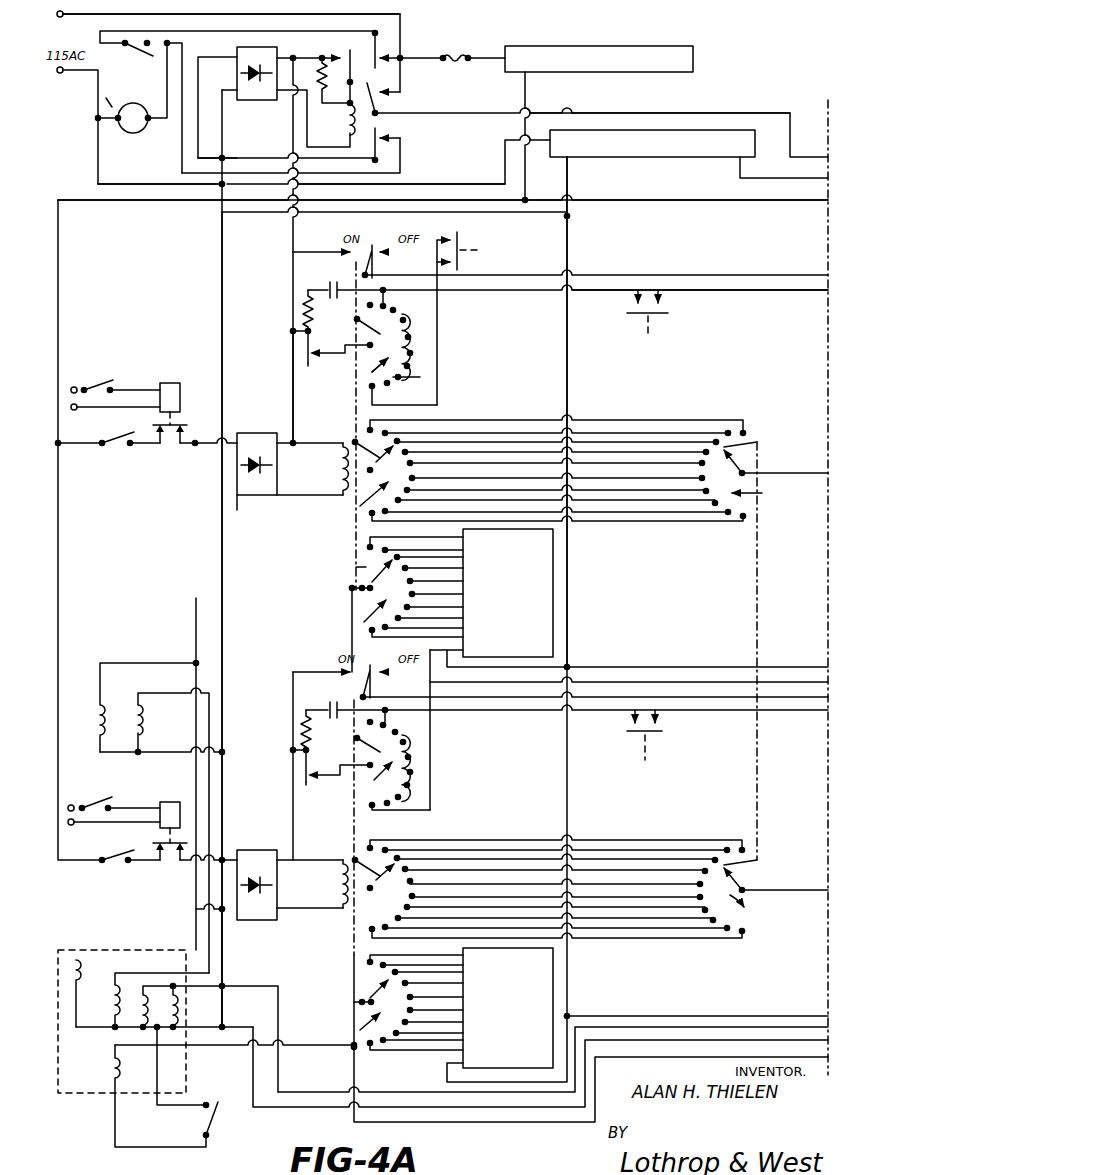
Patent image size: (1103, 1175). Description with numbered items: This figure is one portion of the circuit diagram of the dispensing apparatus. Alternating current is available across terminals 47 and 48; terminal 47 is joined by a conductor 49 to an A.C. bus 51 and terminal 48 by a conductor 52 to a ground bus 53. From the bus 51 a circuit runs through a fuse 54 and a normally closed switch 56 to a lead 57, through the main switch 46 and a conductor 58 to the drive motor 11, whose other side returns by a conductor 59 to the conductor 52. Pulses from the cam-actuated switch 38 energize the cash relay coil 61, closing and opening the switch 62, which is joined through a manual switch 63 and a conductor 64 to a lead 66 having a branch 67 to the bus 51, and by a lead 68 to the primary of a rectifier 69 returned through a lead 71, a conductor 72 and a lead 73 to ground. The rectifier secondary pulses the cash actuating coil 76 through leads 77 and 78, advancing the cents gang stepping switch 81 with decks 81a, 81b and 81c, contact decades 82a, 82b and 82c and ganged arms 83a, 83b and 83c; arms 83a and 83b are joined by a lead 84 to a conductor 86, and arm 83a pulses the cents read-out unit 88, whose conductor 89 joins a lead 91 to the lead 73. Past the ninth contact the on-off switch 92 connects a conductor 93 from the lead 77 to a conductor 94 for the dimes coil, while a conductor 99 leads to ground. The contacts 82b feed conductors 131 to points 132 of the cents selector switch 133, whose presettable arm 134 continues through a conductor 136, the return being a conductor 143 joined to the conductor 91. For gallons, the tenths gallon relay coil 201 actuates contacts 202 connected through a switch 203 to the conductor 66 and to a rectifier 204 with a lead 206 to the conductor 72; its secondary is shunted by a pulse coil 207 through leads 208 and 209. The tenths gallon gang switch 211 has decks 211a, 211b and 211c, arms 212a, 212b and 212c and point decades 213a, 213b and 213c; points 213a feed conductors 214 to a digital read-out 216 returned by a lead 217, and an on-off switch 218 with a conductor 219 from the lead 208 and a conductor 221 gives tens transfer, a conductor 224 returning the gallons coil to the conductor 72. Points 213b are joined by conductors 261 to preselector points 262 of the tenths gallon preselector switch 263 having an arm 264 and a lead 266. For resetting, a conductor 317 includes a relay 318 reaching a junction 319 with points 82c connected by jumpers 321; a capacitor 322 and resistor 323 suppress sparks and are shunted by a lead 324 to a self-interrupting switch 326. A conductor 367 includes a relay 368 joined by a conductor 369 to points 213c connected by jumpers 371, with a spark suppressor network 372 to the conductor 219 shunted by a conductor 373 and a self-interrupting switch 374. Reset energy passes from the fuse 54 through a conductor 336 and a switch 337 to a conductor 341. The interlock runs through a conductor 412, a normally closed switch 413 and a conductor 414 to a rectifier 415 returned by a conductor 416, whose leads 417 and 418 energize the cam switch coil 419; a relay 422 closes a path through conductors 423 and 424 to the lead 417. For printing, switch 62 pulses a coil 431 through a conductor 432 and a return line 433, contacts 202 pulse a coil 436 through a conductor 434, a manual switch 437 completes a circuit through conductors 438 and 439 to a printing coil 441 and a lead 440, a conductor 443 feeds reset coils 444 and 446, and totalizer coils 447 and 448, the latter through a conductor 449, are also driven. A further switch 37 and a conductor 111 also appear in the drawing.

The drive motor 11 is at (118, 132).
The switch 37 is at (120, 796).
The switch 38 is at (105, 380).
The main switch 46 is at (128, 53).
The terminal 47 is at (68, 24).
The terminal 48 is at (66, 86).
The conductor 49 is at (306, 20).
The A.C. bus 51 is at (605, 40).
The conductor 52 is at (474, 180).
The ground bus 53 is at (662, 160).
The fuse 54 is at (459, 63).
The normally closed switch 56 is at (395, 40).
The lead 57 is at (198, 40).
The conductor 58 is at (164, 96).
The conductor 59 is at (110, 96).
The cash relay coil 61 is at (180, 373).
The cash relay switch 62 is at (170, 448).
The manual switch 63 is at (118, 450).
The conductor 64 is at (80, 455).
The lead 66 is at (726, 200).
The branch 67 is at (530, 93).
The lead 68 is at (210, 432).
The rectifier 69 is at (274, 432).
The lead 71 is at (238, 516).
The conductor 72 is at (222, 330).
The lead 73 is at (568, 170).
The cash actuating coil 76 is at (341, 478).
The lead 77 is at (334, 440).
The lead 78 is at (292, 510).
The cash gang stepping switch 81 is at (356, 560).
The deck 81a is at (387, 606).
The deck 81b is at (363, 512).
The deck 81c is at (376, 370).
The decade of contacts 82a is at (368, 628).
The decade of contacts 82b is at (412, 440).
The decade of contacts 82c is at (412, 356).
The rotating arm 83a is at (372, 584).
The rotating arm 83b is at (383, 463).
The rotating arm 83c is at (382, 426).
The lead 84 is at (352, 586).
The conductor 86 is at (654, 663).
The cents digital read-out unit 88 is at (556, 566).
The conductor 89 is at (572, 655).
The lead 91 is at (570, 385).
The on-off switch 92 is at (378, 264).
The conductor 93 is at (294, 358).
The conductor 94 is at (510, 280).
The conductor 99 is at (789, 175).
The line 111 is at (743, 653).
The conductors 131 is at (642, 442).
The switch points 132 is at (745, 428).
The cents selector switch 133 is at (769, 651).
The manually settable arm 134 is at (740, 455).
The conductor 136 is at (818, 468).
The conductor 143 is at (802, 1006).
The tenths gallon relay coil 201 is at (182, 783).
The relay contacts 202 is at (168, 876).
The switch 203 is at (116, 866).
The rectifier 204 is at (278, 840).
The lead 206 is at (226, 924).
The pulse coil 207 is at (338, 896).
The lead 208 is at (320, 862).
The lead 209 is at (284, 916).
The tenths gallon gang switch 211 is at (362, 964).
The deck 211a is at (361, 1022).
The deck 211b is at (363, 900).
The deck 211c is at (362, 827).
The switch arm 212a is at (365, 998).
The switch arm 212b is at (380, 872).
The switch arm 212c is at (386, 730).
The decade of contact points 213a is at (388, 960).
The decade of contact points 213b is at (388, 846).
The decade of contact points 213c is at (412, 746).
The decade of conductors 214 is at (384, 1052).
The digital read-out mechanism 216 is at (508, 1008).
The lead 217 is at (447, 1082).
The on-off switch 218 is at (378, 684).
The conductor 219 is at (298, 714).
The conductor 221 is at (720, 710).
The conductor 224 is at (655, 996).
The decade of conductors 261 is at (650, 870).
The preselector points 262 is at (745, 845).
The tenths gallon preselector switch 263 is at (758, 908).
The preselector arm 264 is at (740, 878).
The lead 266 is at (804, 892).
The conductor 317 is at (758, 292).
The relay 318 is at (634, 322).
The junction 319 is at (384, 310).
The jumpers 321 is at (420, 377).
The capacitor 322 is at (348, 272).
The resistor 323 is at (304, 306).
The lead 324 is at (328, 358).
The self-interrupting switch 326 is at (311, 365).
The conductor 336 is at (398, 84).
The switch 337 is at (380, 103).
The conductor 341 is at (664, 110).
The conductor 367 is at (770, 720).
The relay 368 is at (618, 734).
The conductor 369 is at (490, 712).
The jumpers 371 is at (410, 790).
The spark suppressor network 372 is at (300, 706).
The conductor 373 is at (350, 762).
The self-interrupting switch 374 is at (316, 788).
The conductor 412 is at (182, 158).
The normally closed switch 413 is at (384, 150).
The conductor 414 is at (276, 132).
The rectifier 415 is at (250, 102).
The conductor 416 is at (228, 140).
The lead 417 is at (312, 48).
The lead 418 is at (305, 112).
The cam switch coil 419 is at (346, 130).
The relay 422 is at (460, 268).
The conductor 423 is at (440, 318).
The conductor 424 is at (428, 228).
The coil 431 is at (72, 960).
The conductor 432 is at (196, 602).
The return line 433 is at (76, 1027).
The conductor 434 is at (196, 910).
The coil 436 is at (110, 998).
The manual switch 437 is at (218, 1118).
The conductor 438 is at (482, 1122).
The conductor 439 is at (208, 1044).
The lead 440 is at (157, 1102).
The coil 441 is at (128, 1060).
The conductor 443 is at (282, 980).
The reset coil 444 is at (134, 970).
The reset coil 446 is at (182, 1006).
The coil 447 is at (94, 710).
The coil 448 is at (148, 712).
The conductor 449 is at (212, 708).